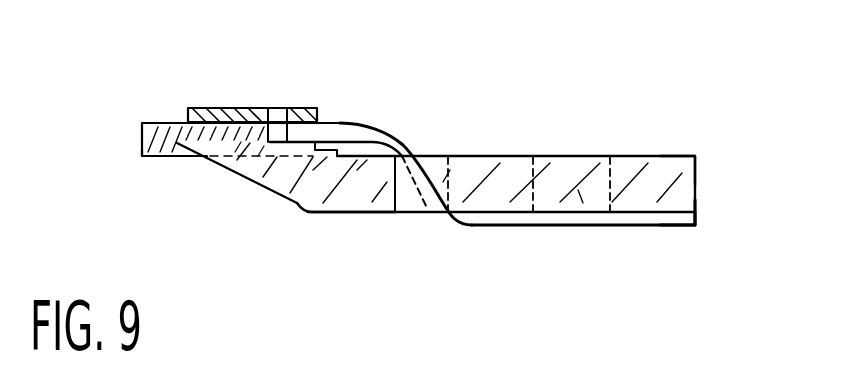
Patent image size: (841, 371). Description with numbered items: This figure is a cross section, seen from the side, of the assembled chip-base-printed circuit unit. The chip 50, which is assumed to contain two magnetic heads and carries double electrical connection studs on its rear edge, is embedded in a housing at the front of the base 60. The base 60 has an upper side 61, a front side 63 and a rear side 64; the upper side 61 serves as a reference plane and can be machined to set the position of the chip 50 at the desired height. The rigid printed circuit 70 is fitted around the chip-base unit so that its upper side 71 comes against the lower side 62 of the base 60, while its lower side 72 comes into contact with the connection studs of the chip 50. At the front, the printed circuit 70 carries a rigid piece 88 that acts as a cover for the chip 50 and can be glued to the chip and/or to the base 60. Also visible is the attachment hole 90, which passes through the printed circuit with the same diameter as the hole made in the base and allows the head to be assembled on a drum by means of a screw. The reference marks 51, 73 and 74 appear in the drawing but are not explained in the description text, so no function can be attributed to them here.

The chip 50 is at (148, 162).
The base plate 51 is at (264, 145).
The base 60 is at (299, 213).
The upper side 61 is at (643, 156).
The lower side 62 is at (383, 214).
The front side 63 is at (222, 170).
The rear side 64 is at (698, 168).
The rigid printed circuit 70 is at (387, 133).
The upper side 71 is at (485, 209).
The lower side 72 is at (497, 228).
The connection pin 73 is at (282, 128).
The bottom edge 74 is at (698, 216).
The rigid piece 88 is at (195, 108).
The attachment hole 90 is at (583, 203).